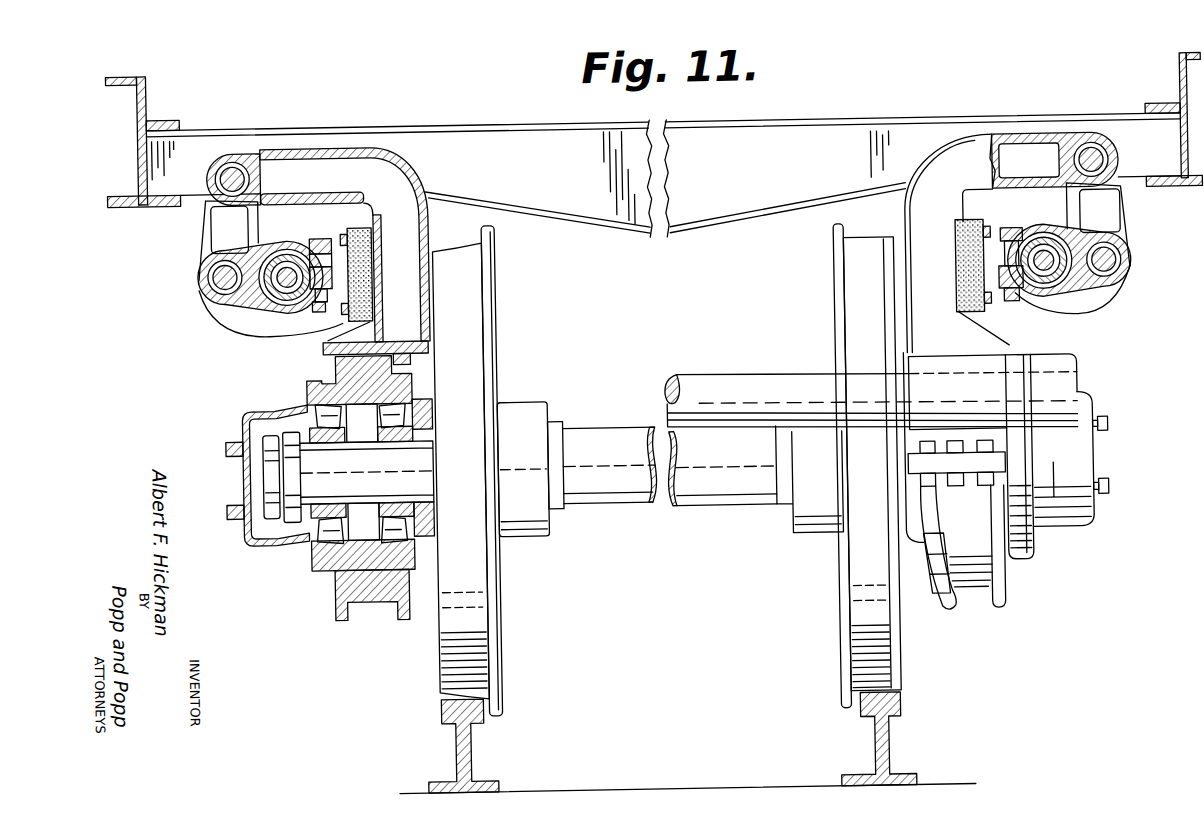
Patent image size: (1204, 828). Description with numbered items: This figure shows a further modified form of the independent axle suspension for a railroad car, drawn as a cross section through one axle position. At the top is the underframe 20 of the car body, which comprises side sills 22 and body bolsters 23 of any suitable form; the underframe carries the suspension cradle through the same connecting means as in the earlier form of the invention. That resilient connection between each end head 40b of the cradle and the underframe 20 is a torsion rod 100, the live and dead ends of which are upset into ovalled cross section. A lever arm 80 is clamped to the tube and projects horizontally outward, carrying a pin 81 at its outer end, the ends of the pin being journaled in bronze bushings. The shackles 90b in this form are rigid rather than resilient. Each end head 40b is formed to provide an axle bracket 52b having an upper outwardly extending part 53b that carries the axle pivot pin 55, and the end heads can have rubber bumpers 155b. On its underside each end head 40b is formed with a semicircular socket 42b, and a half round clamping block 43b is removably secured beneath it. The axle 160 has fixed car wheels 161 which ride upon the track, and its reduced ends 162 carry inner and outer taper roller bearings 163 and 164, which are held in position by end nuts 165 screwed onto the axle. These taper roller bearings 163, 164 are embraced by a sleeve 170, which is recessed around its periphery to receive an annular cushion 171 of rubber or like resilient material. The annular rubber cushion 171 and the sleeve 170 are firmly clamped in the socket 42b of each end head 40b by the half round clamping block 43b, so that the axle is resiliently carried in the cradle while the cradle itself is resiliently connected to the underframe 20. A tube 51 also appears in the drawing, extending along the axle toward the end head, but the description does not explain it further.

The underframe 20 is at (558, 101).
The side sills 22 is at (143, 98).
The body bolsters 23 is at (675, 252).
The torque tube 51 is at (741, 381).
The axle bracket 52b is at (413, 168).
The upper outwardly extending part 53b is at (249, 154).
The axle pivot pin 55 is at (240, 154).
The lever arm 80 is at (236, 308).
The pin 81 is at (211, 274).
The shackles 90b is at (208, 233).
The torsion rod 100 is at (263, 292).
The rubber bumpers 155b is at (352, 228).
The end head 40b is at (326, 344).
The semicircular socket 42b is at (400, 345).
The half round clamping block 43b is at (368, 617).
The axle 160 is at (640, 509).
The car wheels 161 is at (474, 586).
The reduced ends 162 is at (367, 472).
The inner taper roller bearing 163 is at (416, 408).
The outer taper roller bearing 164 is at (316, 538).
The end nuts 165 is at (292, 470).
The sleeve 170 is at (313, 389).
The annular cushion 171 is at (336, 588).